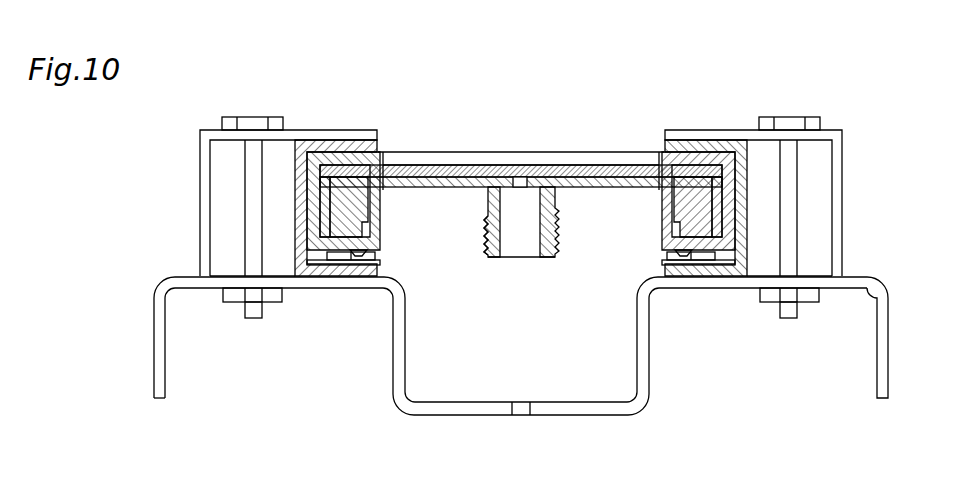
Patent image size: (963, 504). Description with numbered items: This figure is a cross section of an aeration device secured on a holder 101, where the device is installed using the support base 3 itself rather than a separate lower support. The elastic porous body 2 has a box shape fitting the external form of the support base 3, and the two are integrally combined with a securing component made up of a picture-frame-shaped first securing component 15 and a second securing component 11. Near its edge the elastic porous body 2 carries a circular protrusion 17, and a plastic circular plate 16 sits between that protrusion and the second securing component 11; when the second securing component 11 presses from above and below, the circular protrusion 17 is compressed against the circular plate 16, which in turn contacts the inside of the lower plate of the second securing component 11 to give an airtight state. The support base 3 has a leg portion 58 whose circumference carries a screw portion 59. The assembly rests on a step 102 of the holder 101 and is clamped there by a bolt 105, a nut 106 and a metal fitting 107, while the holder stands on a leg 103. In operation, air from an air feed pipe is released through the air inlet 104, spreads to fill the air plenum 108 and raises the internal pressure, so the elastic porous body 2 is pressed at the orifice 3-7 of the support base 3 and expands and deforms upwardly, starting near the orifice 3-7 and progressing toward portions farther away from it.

The elastic porous body 2 is at (463, 155).
The support base 3 is at (683, 170).
The orifice 3-7 is at (522, 165).
The second securing component 11 is at (335, 147).
The first securing component 15 is at (350, 148).
The circular plate 16 is at (350, 265).
The circular protrusion 17 is at (683, 270).
The leg portion 58 is at (555, 212).
The screw portion 59 is at (488, 242).
The holder 101 is at (548, 330).
The step 102 is at (858, 278).
The leg 103 is at (878, 364).
The air inlet 104 is at (518, 415).
The bolt 105 is at (250, 122).
The nut 106 is at (229, 297).
The metal fitting 107 is at (204, 192).
The air plenum 108 is at (553, 348).